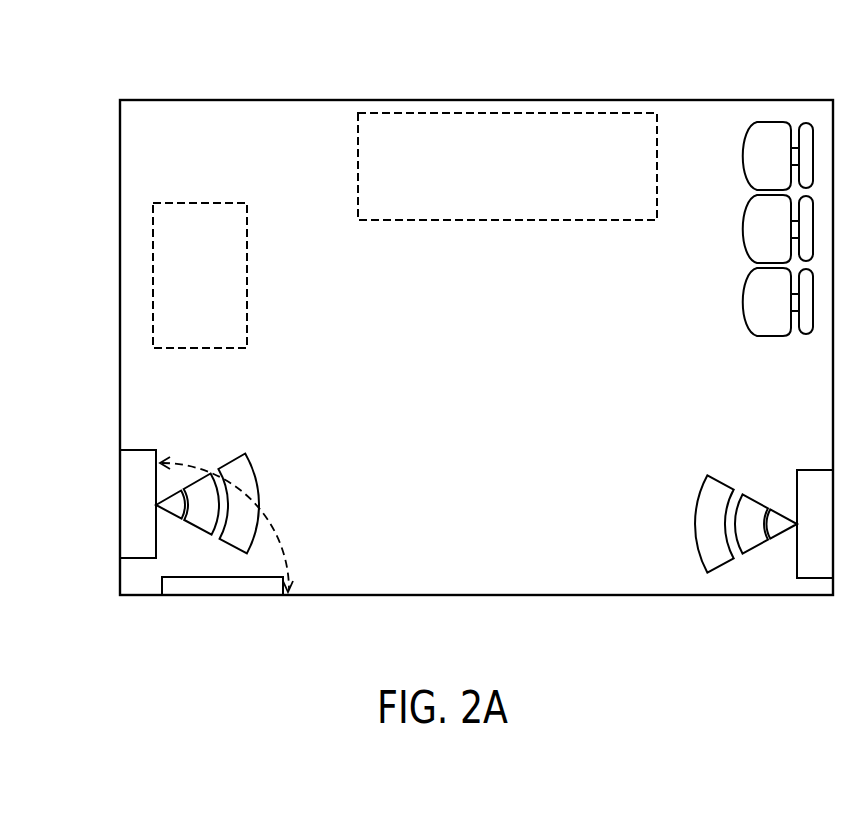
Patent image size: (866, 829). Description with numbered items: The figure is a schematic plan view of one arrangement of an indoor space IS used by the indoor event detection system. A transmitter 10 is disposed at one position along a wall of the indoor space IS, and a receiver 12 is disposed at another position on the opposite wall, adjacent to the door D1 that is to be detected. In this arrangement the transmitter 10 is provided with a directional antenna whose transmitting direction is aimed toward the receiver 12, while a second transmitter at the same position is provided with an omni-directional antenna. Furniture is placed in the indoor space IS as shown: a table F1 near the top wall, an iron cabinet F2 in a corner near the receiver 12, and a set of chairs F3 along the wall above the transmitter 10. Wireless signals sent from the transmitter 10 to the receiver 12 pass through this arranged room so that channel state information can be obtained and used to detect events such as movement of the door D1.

The indoor space IS is at (150, 162).
The table F1 is at (505, 113).
The iron cabinet F2 is at (198, 203).
The set of chairs F3 is at (770, 122).
The receiver 12 is at (155, 450).
The transmitter 10 is at (797, 470).
The door D1 is at (177, 590).